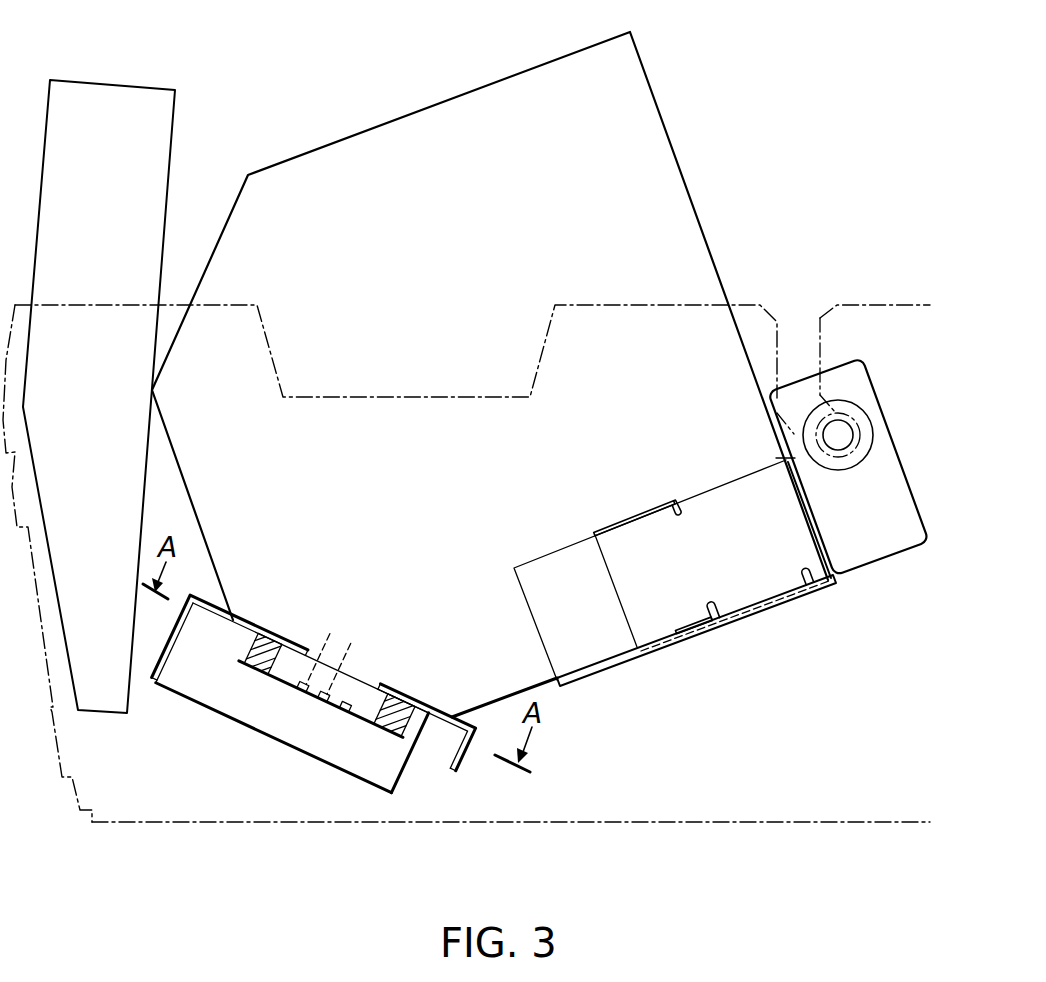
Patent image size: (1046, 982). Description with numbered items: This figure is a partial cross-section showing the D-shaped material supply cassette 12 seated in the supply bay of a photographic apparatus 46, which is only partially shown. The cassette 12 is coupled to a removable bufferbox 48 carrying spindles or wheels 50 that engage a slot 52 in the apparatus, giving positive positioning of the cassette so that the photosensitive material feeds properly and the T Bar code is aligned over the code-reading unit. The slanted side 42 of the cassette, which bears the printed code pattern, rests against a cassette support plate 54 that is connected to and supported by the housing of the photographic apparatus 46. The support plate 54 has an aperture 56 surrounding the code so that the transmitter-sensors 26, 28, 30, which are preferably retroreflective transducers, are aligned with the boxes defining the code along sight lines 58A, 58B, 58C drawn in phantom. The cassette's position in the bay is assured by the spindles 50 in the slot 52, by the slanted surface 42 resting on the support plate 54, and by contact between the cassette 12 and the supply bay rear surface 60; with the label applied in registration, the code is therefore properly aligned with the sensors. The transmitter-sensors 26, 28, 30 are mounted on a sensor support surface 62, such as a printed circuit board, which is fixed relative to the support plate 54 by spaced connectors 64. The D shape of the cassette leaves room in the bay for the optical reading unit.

The material supply cassette 12 is at (680, 170).
The transmitter-sensor 26 is at (338, 704).
The transmitter-sensor 28 is at (304, 692).
The transmitter-sensor 30 is at (285, 686).
The slanted side 42 is at (424, 718).
The photographic apparatus 46 is at (672, 824).
The removable bufferbox 48 is at (857, 562).
The spindles or wheels 50 is at (840, 433).
The slot 52 is at (802, 352).
The cassette support plate 54 is at (470, 733).
The aperture 56 is at (367, 688).
The sight line 58A is at (350, 703).
The sight line 58B is at (372, 661).
The sight line 58C is at (324, 637).
The supply bay rear surface 60 is at (154, 351).
The sensor support surface 62 is at (358, 727).
The spaced connectors 64 is at (248, 648).